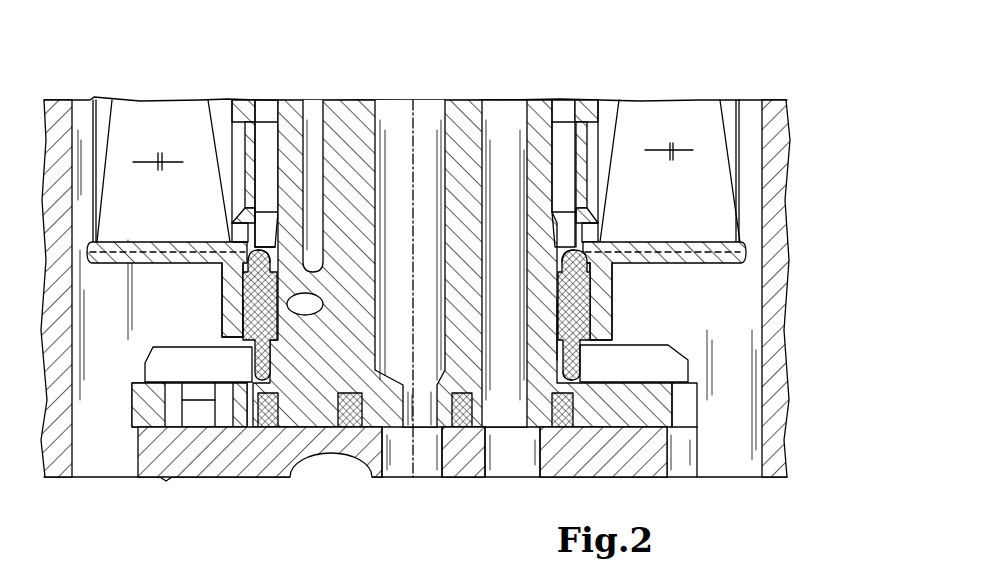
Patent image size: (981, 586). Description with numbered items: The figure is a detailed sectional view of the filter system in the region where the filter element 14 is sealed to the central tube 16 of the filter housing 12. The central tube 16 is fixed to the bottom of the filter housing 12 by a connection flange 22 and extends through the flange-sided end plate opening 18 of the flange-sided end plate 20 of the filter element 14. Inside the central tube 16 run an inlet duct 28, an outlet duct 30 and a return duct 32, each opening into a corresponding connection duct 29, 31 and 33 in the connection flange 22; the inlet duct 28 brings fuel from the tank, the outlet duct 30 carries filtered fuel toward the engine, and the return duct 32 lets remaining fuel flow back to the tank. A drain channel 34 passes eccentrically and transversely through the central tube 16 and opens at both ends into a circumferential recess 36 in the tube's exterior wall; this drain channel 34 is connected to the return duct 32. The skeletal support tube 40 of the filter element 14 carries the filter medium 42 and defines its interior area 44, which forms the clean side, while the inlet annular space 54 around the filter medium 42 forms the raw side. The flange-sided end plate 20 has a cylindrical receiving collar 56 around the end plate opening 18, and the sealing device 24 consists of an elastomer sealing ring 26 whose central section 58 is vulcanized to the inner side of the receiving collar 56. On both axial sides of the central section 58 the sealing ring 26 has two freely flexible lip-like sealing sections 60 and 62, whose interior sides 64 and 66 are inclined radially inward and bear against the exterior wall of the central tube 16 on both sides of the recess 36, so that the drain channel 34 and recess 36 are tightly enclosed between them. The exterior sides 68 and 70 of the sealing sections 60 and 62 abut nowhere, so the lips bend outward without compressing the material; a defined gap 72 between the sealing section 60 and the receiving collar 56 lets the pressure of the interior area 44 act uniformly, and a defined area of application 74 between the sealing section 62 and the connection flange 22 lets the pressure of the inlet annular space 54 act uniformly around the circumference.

The filter housing 12 is at (63, 117).
The filter element 14 is at (236, 74).
The central tube 16 is at (358, 96).
The flange-sided end plate opening 18 is at (592, 234).
The flange-sided end plate 20 is at (715, 257).
The connection flange 22 is at (258, 462).
The sealing device 24 is at (545, 330).
The sealing ring 26 is at (604, 302).
The inlet duct 28 is at (501, 110).
The connection duct 29 is at (513, 457).
The outlet duct 30 is at (311, 112).
The connection duct 31 is at (345, 457).
The return duct 32 is at (421, 112).
The connection duct 33 is at (425, 467).
The drain channel 34 is at (322, 307).
The recess 36 is at (258, 308).
The support tube 40 is at (233, 100).
The filter medium 42 is at (663, 118).
The interior area 44 is at (265, 125).
The inlet annular space 54 is at (84, 113).
The receiving collar 56 is at (232, 282).
The central section 58 is at (245, 318).
The sealing section 60 is at (275, 268).
The sealing section 62 is at (258, 428).
The interior side 64 is at (565, 260).
The interior side 66 is at (565, 362).
The exterior side 68 is at (585, 265).
The exterior side 70 is at (577, 372).
The gap 72 is at (257, 247).
The area of application 74 is at (247, 350).